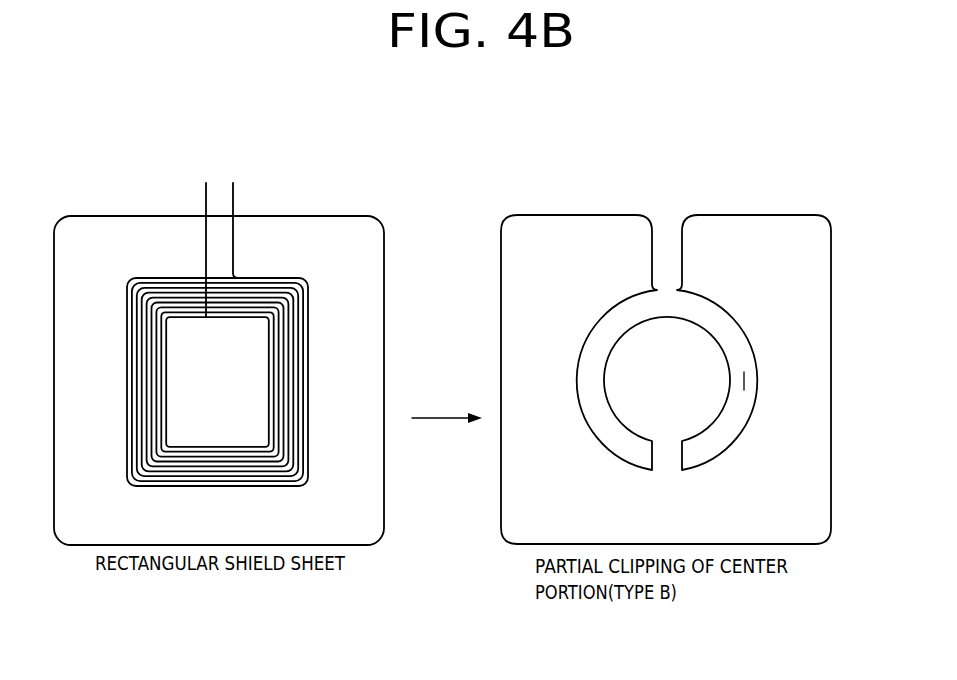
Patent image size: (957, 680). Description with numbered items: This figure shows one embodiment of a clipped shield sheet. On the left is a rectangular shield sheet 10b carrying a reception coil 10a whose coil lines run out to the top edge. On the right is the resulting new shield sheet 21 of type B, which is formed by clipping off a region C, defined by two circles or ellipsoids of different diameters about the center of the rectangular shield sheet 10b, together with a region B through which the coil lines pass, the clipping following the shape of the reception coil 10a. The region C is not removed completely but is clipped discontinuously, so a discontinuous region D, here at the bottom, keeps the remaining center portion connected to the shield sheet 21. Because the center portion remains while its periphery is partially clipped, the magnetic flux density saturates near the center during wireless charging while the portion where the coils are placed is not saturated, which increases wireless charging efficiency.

The reception coil 10a is at (308, 332).
The rectangular shield sheet 10b is at (352, 388).
The shield sheet 21 is at (575, 243).
The region B is at (673, 252).
The region C is at (744, 377).
The discontinuous region D is at (668, 461).